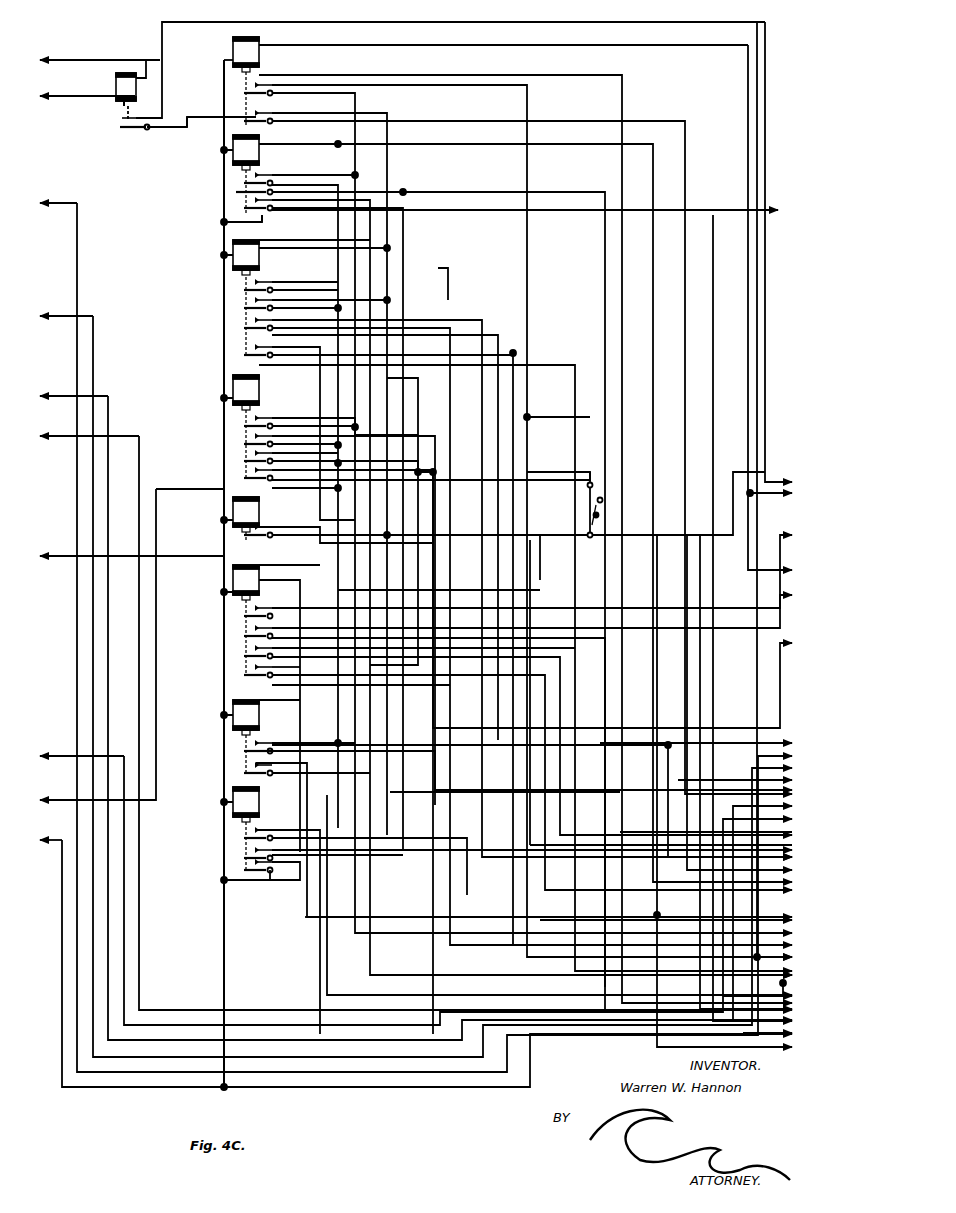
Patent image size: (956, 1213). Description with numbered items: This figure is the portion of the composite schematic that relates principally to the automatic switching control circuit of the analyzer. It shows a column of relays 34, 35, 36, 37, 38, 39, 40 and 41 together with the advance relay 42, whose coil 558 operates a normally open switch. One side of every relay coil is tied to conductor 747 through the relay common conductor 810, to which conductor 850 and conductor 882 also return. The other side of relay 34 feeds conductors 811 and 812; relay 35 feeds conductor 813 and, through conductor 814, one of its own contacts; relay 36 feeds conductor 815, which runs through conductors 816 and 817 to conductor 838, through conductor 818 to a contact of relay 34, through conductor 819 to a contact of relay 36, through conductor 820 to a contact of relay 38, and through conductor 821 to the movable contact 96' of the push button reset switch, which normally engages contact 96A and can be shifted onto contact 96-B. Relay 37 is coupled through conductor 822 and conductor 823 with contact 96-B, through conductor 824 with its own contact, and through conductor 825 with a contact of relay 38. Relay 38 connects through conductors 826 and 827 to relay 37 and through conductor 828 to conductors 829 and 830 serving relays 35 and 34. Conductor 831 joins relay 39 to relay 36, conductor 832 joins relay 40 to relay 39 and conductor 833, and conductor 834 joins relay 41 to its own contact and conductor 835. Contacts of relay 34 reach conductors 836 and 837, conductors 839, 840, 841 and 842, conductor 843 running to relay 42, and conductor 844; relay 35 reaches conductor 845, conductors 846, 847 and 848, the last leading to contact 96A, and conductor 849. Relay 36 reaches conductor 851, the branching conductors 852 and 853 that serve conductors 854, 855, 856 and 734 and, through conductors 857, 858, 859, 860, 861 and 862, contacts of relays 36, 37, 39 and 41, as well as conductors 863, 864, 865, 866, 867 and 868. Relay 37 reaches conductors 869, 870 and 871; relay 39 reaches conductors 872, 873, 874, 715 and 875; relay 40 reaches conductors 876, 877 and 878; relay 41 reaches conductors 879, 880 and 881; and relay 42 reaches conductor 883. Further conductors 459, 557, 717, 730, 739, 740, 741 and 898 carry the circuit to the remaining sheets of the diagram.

The relay 34 is at (260, 56).
The relay 35 is at (260, 152).
The relay 36 is at (260, 258).
The relay 37 is at (260, 390).
The relay 38 is at (266, 514).
The relay 39 is at (263, 586).
The relay 40 is at (260, 719).
The relay 41 is at (260, 812).
The advance relay 42 is at (114, 88).
The conductor 459 is at (74, 60).
The conductor 557 is at (70, 100).
The coil 558 is at (118, 78).
The conductor 715 is at (54, 554).
The conductor 717 is at (62, 202).
The conductor 730 is at (54, 754).
The conductor 734 is at (192, 487).
The conductor 739 is at (56, 314).
The conductor 740 is at (54, 434).
The conductor 741 is at (54, 394).
The conductor 747 is at (54, 838).
The relay common conductor 810 is at (224, 318).
The conductor 811 is at (660, 52).
The conductor 812 is at (786, 491).
The conductor 813 is at (478, 152).
The conductor 814 is at (339, 168).
The conductor 815 is at (314, 230).
The conductor 816 is at (406, 380).
The conductor 817 is at (546, 532).
The conductor 818 is at (292, 132).
The conductor 819 is at (305, 278).
The conductor 820 is at (331, 528).
The conductor 821 is at (590, 538).
The conductor 822 is at (420, 416).
The conductor 823 is at (538, 466).
The conductor 824 is at (416, 458).
The conductor 825 is at (424, 556).
The conductor 826 is at (348, 510).
The conductor 827 is at (311, 413).
The conductor 828 is at (328, 240).
The conductor 829 is at (315, 169).
The conductor 830 is at (356, 100).
The conductor 831 is at (301, 600).
The conductor 832 is at (310, 716).
The conductor 833 is at (751, 835).
The conductor 834 is at (286, 818).
The conductor 835 is at (780, 643).
The conductor 836 is at (446, 80).
The conductor 837 is at (784, 1024).
The conductor 838 is at (418, 688).
The conductor 839 is at (532, 98).
The conductor 840 is at (466, 414).
The conductor 841 is at (528, 438).
The conductor 842 is at (812, 1037).
The conductor 843 is at (189, 108).
The conductor 844 is at (436, 116).
The conductor 845 is at (366, 184).
The conductor 846 is at (398, 190).
The conductor 847 is at (406, 278).
The conductor 848 is at (556, 192).
The conductor 849 is at (779, 1011).
The conductor 850 is at (277, 227).
The conductor 851 is at (444, 286).
The conductor 852 is at (313, 269).
The conductor 853 is at (336, 592).
The conductor 854 is at (544, 592).
The conductor 855 is at (432, 846).
The conductor 856 is at (446, 940).
The conductor 857 is at (331, 284).
The conductor 858 is at (304, 446).
The conductor 859 is at (298, 416).
The conductor 860 is at (306, 492).
The conductor 861 is at (423, 653).
The conductor 862 is at (280, 838).
The conductor 863 is at (478, 318).
The conductor 864 is at (538, 664).
The conductor 865 is at (414, 364).
The conductor 866 is at (484, 338).
The conductor 867 is at (430, 326).
The conductor 868 is at (551, 365).
The conductor 869 is at (464, 458).
The conductor 870 is at (756, 702).
The conductor 871 is at (423, 652).
The conductor 872 is at (588, 622).
The conductor 873 is at (548, 794).
The conductor 874 is at (344, 640).
The conductor 875 is at (312, 712).
The conductor 876 is at (380, 746).
The conductor 877 is at (374, 792).
The conductor 878 is at (540, 881).
The conductor 879 is at (399, 916).
The conductor 880 is at (657, 914).
The conductor 881 is at (655, 930).
The conductor 882 is at (262, 896).
The conductor 883 is at (328, 28).
The conductor 898 is at (774, 998).
The reset switch contact 96-B is at (584, 502).
The reset switch contact 96A is at (604, 500).
The movable contact 96' is at (629, 511).